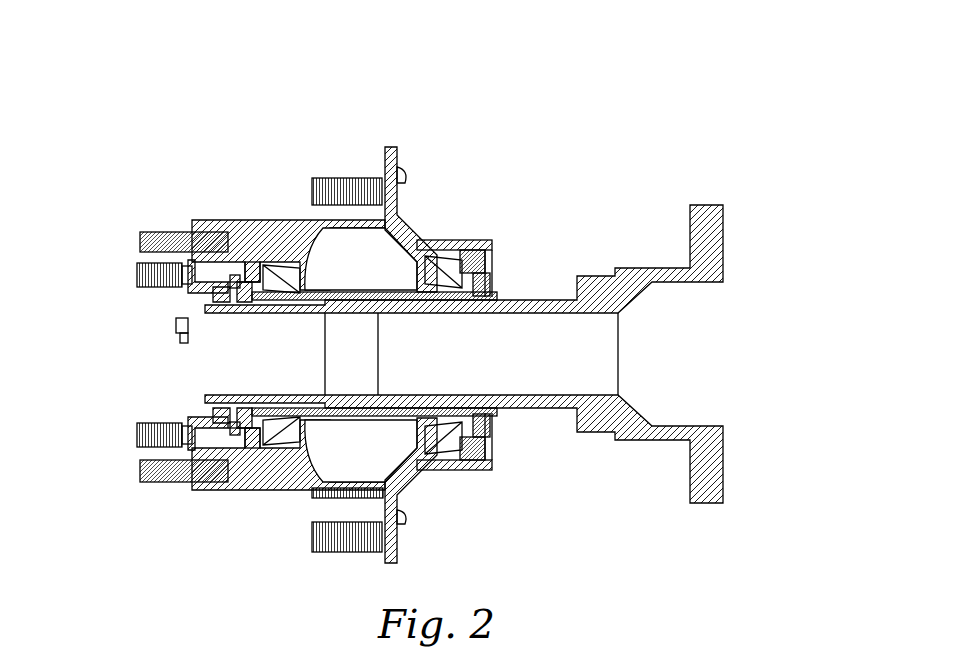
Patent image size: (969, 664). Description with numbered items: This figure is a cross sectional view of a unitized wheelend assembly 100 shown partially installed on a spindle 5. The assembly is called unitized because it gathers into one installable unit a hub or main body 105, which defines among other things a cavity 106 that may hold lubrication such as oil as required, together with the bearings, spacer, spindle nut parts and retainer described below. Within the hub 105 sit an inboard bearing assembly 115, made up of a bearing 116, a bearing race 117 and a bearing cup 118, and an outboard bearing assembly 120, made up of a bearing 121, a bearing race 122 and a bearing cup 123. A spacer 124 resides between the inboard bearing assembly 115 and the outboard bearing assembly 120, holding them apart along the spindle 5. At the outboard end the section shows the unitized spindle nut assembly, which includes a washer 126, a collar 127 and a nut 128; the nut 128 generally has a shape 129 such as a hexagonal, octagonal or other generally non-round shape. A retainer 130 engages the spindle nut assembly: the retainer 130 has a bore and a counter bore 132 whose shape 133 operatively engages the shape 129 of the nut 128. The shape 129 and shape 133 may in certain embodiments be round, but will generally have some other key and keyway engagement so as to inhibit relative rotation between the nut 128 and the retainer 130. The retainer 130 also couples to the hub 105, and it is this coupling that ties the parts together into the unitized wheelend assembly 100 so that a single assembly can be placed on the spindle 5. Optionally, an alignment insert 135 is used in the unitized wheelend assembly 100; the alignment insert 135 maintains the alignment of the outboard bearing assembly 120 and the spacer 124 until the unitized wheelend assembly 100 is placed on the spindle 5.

The spindle 5 is at (571, 337).
The unitized wheelend assembly 100 is at (185, 73).
The hub or main body 105 is at (410, 215).
The cavity 106 is at (393, 263).
The inboard bearing assembly 115 is at (462, 483).
The bearing 116 is at (493, 454).
The bearing race 117 is at (484, 285).
The bearing cup 118 is at (478, 255).
The outboard bearing assembly 120 is at (273, 255).
The bearing 121 is at (266, 486).
The bearing race 122 is at (228, 488).
The bearing cup 123 is at (290, 480).
The spacer 124 is at (393, 422).
The washer 126 is at (238, 278).
The collar 127 is at (233, 277).
The nut 128 is at (195, 462).
The shape 129 is at (205, 407).
The retainer 130 is at (140, 261).
The counter bore 132 is at (220, 277).
The shape 133 is at (197, 295).
The alignment insert 135 is at (233, 342).